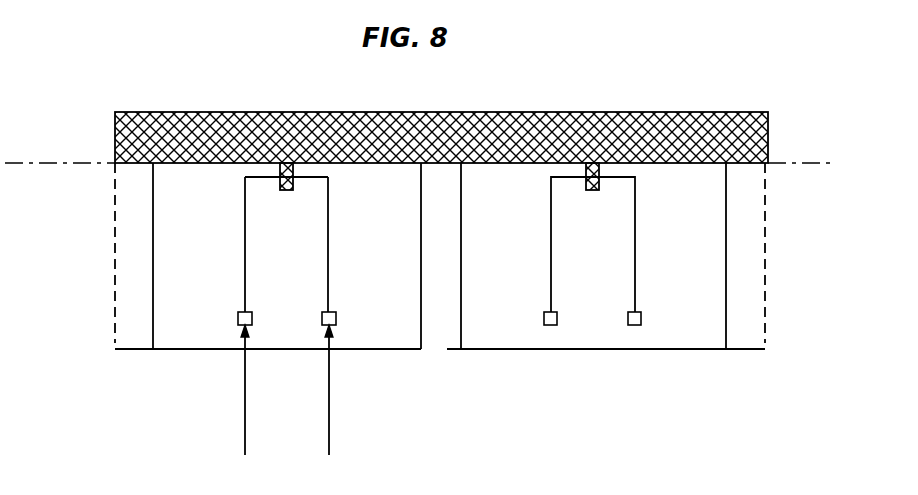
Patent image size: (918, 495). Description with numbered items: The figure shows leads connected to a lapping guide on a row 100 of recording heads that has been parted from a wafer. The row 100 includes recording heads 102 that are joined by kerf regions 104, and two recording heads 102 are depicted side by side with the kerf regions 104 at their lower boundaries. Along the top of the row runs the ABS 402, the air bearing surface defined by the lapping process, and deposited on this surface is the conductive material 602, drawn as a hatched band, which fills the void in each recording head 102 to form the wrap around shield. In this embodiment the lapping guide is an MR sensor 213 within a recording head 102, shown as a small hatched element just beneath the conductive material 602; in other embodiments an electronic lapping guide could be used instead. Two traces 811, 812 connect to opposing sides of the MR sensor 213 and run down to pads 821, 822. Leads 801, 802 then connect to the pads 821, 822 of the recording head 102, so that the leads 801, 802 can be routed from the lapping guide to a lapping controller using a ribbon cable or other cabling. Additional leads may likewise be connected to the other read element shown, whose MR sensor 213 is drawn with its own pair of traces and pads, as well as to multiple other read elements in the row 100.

The row 100 is at (611, 68).
The recording head 102 is at (200, 191).
The kerf region 104 is at (132, 341).
The MR sensor 213 is at (287, 191).
The ABS 402 is at (62, 165).
The conductive material 602 is at (182, 111).
The trace 811 is at (245, 239).
The trace 812 is at (328, 239).
The pad 821 is at (238, 318).
The pad 822 is at (336, 318).
The lead 801 is at (246, 411).
The lead 802 is at (329, 413).